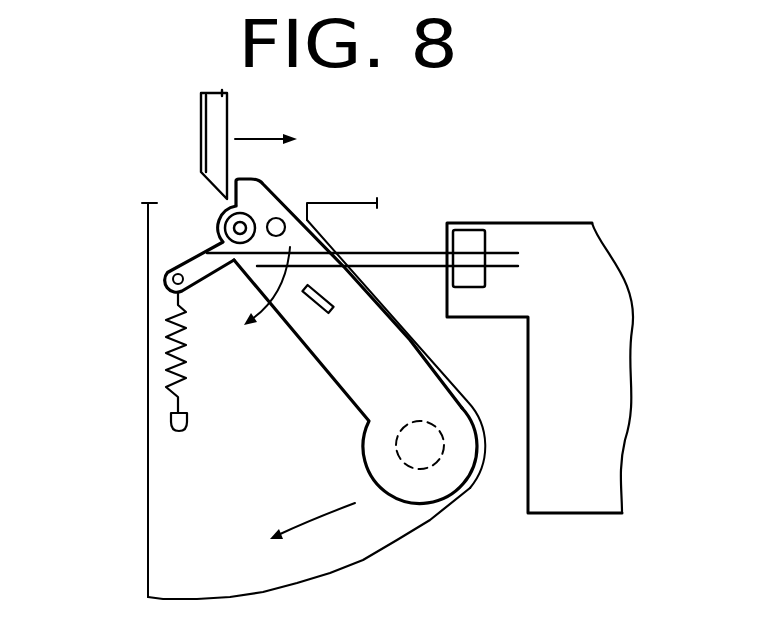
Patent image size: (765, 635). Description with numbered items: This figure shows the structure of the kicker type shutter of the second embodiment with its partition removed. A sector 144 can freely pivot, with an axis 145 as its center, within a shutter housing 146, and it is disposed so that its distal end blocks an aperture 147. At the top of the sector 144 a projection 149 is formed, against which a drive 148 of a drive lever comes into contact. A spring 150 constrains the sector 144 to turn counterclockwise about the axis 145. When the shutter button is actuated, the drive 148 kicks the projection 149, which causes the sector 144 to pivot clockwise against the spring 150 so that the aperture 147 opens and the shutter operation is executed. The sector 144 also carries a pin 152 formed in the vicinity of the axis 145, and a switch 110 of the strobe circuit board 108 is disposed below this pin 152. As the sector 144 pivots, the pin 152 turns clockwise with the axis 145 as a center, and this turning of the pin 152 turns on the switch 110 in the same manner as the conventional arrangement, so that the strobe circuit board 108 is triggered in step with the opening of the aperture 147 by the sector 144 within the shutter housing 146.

The strobe circuit board 108 is at (600, 400).
The switch 110 is at (387, 253).
The sector 144 is at (333, 382).
The axis 145 is at (232, 222).
The shutter housing 146 is at (476, 410).
The aperture 147 is at (398, 444).
The drive 148 is at (200, 113).
The projection 149 is at (247, 177).
The spring 150 is at (170, 336).
The pin 152 is at (274, 216).